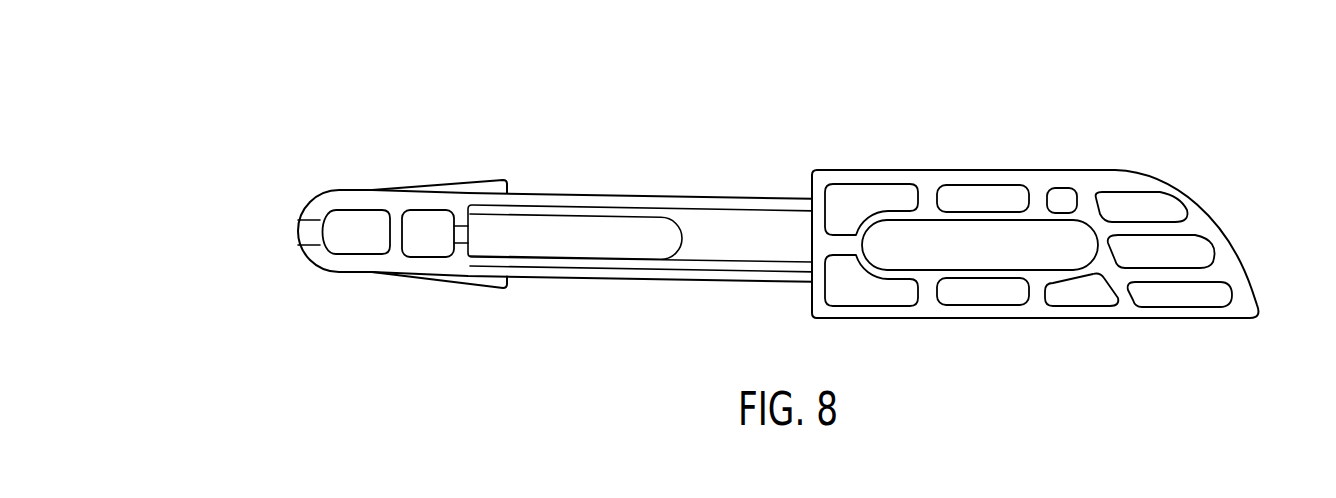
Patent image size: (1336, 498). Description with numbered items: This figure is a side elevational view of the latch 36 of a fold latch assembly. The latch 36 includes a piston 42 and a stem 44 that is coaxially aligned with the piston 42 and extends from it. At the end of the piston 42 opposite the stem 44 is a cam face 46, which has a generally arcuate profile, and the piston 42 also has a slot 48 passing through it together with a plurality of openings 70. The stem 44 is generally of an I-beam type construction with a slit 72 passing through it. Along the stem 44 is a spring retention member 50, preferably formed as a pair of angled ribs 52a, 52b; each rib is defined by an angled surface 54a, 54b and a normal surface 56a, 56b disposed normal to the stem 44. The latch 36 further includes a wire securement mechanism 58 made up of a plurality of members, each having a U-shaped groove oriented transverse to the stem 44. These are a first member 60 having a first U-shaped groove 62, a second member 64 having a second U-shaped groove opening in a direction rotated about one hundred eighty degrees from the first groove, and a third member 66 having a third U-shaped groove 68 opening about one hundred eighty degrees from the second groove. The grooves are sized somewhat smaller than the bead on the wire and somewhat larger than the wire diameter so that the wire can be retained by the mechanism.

The latch 36 is at (637, 105).
The piston 42 is at (1020, 123).
The stem 44 is at (592, 192).
The cam face 46 is at (1245, 272).
The slot 48 is at (925, 270).
The spring retention member 50 is at (332, 152).
The angled rib 52a is at (468, 288).
The angled rib 52b is at (461, 187).
The angled surface 54a is at (420, 284).
The angled surface 54b is at (393, 187).
The normal surface 56a is at (508, 288).
The normal surface 56b is at (508, 187).
The wire securement mechanism 58 is at (208, 235).
The first member 60 is at (317, 253).
The first U-shaped groove 62 is at (302, 236).
The second member 64 is at (393, 238).
The third member 66 is at (470, 258).
The third U-shaped groove 68 is at (472, 235).
The openings 70 is at (852, 197).
The slit 72 is at (657, 218).